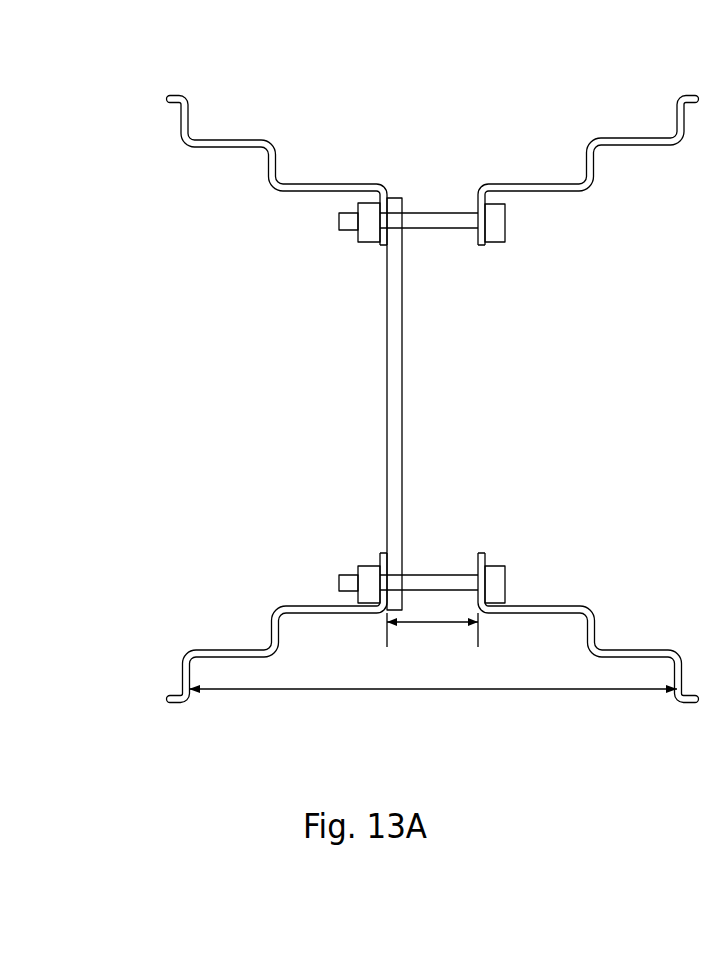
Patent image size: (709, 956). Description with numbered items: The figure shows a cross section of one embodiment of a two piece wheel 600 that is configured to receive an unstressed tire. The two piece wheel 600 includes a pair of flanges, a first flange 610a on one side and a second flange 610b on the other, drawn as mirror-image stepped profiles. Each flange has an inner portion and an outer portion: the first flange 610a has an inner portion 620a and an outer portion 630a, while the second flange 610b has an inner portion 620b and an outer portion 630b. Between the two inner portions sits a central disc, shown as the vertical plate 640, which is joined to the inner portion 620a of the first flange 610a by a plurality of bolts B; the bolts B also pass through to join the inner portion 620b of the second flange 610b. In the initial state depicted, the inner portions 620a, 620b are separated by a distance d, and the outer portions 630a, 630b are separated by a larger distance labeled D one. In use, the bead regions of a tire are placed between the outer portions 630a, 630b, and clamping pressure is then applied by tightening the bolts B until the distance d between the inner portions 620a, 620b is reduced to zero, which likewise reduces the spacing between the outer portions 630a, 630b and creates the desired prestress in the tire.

The two piece wheel 600 is at (284, 88).
The center plate / spacer 640 is at (382, 393).
The inner portion of first flange 620a is at (382, 555).
The inner portion of second flange 620b is at (477, 557).
The bolts B is at (505, 577).
The first flange 610a is at (267, 643).
The second flange 610b is at (605, 645).
The outer portion of first flange 630a is at (190, 688).
The outer portion of second flange 630b is at (678, 697).